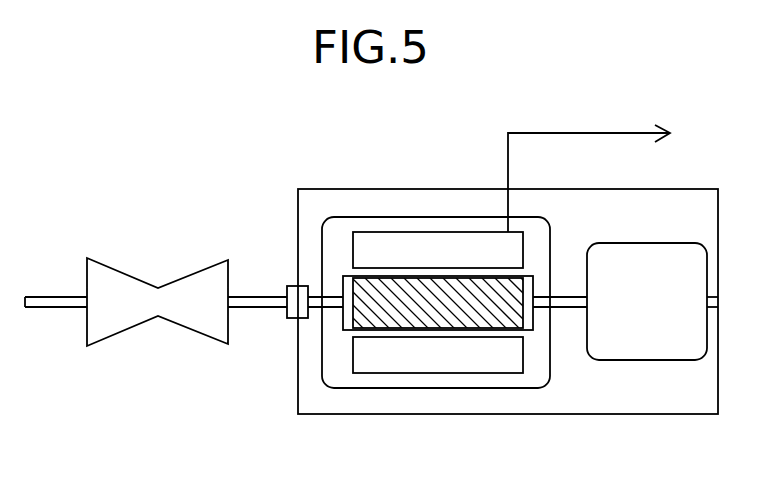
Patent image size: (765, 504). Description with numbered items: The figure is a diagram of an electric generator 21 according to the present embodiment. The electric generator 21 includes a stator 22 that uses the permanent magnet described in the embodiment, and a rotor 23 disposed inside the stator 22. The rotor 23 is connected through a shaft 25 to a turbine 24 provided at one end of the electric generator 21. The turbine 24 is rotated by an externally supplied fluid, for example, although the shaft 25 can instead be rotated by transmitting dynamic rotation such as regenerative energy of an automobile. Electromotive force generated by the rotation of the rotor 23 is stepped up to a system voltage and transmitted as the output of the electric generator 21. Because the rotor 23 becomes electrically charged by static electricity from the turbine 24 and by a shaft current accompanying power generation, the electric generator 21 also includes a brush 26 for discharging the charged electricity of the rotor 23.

The electric generator 21 is at (343, 188).
The stator 22 is at (408, 363).
The rotor 23 is at (452, 320).
The turbine 24 is at (198, 272).
The shaft 25 is at (265, 310).
The brush 26 is at (638, 346).